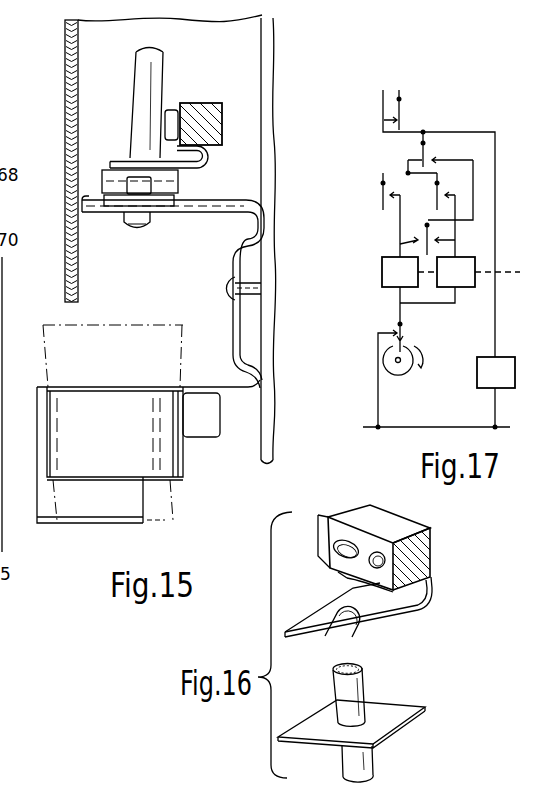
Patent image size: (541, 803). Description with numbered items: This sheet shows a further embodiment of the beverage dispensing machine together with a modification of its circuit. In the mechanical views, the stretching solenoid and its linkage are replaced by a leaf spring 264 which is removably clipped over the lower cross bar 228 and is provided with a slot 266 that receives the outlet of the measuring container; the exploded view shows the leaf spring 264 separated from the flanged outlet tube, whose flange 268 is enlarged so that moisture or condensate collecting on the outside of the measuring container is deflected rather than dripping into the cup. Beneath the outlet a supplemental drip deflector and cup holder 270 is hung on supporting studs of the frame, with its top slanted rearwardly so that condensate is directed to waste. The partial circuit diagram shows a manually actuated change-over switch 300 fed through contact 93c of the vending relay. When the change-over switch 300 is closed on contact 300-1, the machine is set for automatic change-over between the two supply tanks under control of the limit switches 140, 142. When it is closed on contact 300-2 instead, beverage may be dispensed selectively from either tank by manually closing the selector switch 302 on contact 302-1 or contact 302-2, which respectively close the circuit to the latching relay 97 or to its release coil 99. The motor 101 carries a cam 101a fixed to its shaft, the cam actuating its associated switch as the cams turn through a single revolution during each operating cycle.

In FIG. 15, the lower cross bar 228 is at (195, 106).
In FIG. 16, the lower cross bar 228 is at (420, 562).
In FIG. 15, the leaf spring 264 is at (206, 162).
In FIG. 16, the leaf spring 264 is at (378, 620).
In FIG. 16, the slot 266 is at (320, 640).
In FIG. 15, the flange 268 is at (110, 163).
In FIG. 16, the flange 268 is at (403, 712).
In FIG. 15, the drip deflector and cup holder 270 is at (236, 262).
In FIG. 17, the contact 93c is at (401, 102).
In FIG. 17, the change-over switch 300 is at (423, 158).
In FIG. 17, the contact 300-1 is at (418, 158).
In FIG. 17, the contact 300-2 is at (438, 159).
In FIG. 17, the limit switch 140 is at (383, 190).
In FIG. 17, the limit switch 142 is at (439, 193).
In FIG. 17, the selector switch 302 is at (427, 225).
In FIG. 17, the contact 302-1 is at (445, 240).
In FIG. 17, the contact 302-2 is at (400, 244).
In FIG. 17, the release coil 99 is at (400, 272).
In FIG. 17, the latching relay 97 is at (456, 272).
In FIG. 17, the motor 101 is at (496, 372).
In FIG. 17, the cam 101a is at (406, 371).